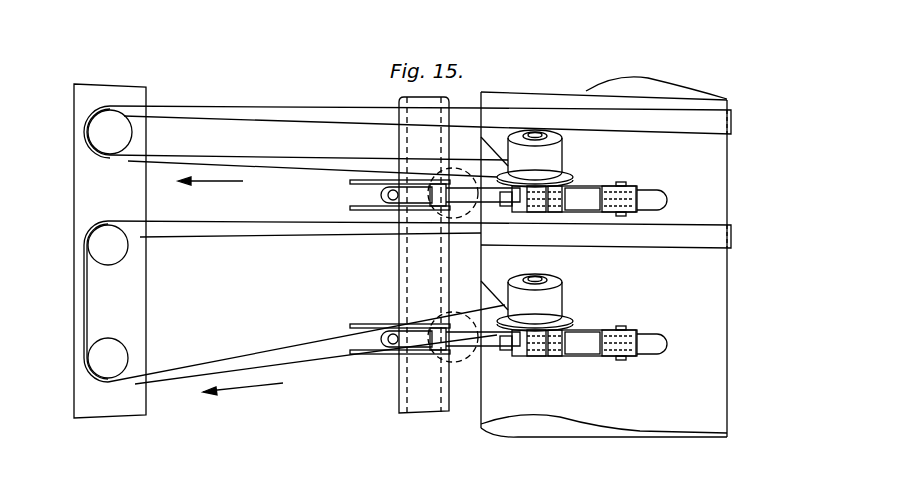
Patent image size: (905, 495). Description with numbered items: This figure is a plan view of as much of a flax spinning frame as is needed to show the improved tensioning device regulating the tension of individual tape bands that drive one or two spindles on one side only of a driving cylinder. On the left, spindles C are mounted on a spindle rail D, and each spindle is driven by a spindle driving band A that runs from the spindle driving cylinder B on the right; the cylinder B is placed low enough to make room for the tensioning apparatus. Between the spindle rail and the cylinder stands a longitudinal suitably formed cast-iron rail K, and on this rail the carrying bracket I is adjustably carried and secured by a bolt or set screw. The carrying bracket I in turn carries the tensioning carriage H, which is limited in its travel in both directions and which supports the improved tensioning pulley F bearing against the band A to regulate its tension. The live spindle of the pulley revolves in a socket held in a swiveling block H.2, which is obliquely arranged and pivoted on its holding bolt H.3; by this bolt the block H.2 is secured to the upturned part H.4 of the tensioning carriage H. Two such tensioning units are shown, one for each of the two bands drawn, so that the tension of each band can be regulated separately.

The spindle driving band A is at (290, 167).
The spindle driving cylinder B is at (606, 257).
The spindle C is at (100, 132).
The spindle rail D is at (137, 265).
The tensioning pulley F is at (566, 176).
The tensioning carriage H is at (503, 198).
The swiveling block H.2 is at (537, 213).
The holding bolt H.3 is at (582, 271).
The upturned part of the tensioning carriage H.4 is at (557, 214).
The carrying bracket I is at (357, 184).
The rail K is at (405, 386).